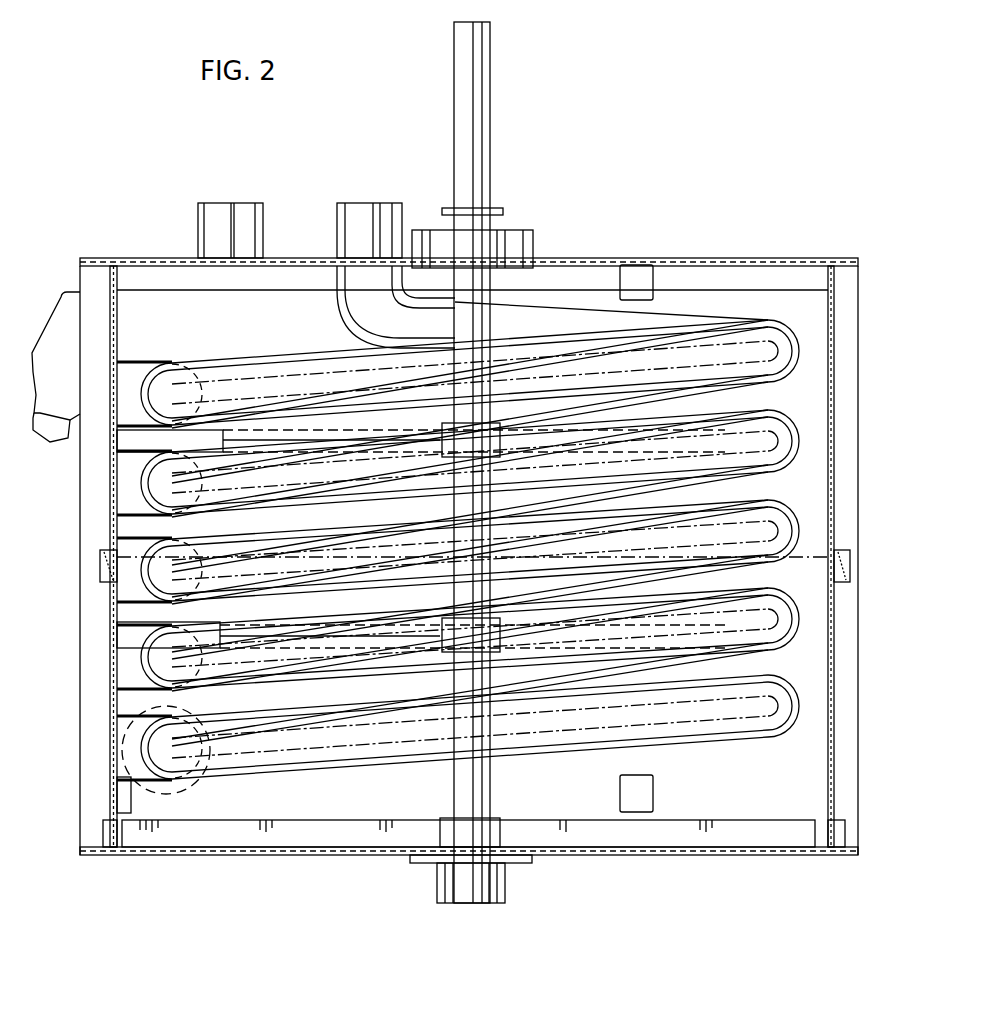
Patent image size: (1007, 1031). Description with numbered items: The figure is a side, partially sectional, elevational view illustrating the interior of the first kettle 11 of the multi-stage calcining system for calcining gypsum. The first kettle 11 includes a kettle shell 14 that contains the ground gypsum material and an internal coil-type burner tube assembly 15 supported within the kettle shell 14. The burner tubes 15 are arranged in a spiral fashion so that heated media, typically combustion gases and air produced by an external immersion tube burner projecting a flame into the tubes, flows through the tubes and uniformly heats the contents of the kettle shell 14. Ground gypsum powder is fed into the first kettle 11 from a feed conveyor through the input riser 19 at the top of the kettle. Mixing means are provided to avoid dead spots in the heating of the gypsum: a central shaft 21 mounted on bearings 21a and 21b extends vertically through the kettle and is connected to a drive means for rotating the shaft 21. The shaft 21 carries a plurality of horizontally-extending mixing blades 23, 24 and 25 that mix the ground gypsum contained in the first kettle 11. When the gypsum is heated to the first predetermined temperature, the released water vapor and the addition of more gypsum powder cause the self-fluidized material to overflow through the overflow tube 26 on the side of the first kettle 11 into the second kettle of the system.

The first kettle 11 is at (675, 258).
The kettle shell 14 is at (834, 305).
The internal coil-type burner tube assembly 15 is at (807, 420).
The input riser 19 is at (215, 205).
The central shaft 21 is at (482, 82).
The bearing 21a is at (512, 244).
The bearing 21b is at (460, 888).
The mixing blade 23 is at (185, 452).
The mixing blade 24 is at (230, 617).
The mixing blade 25 is at (240, 830).
The overflow tube 26 is at (62, 328).